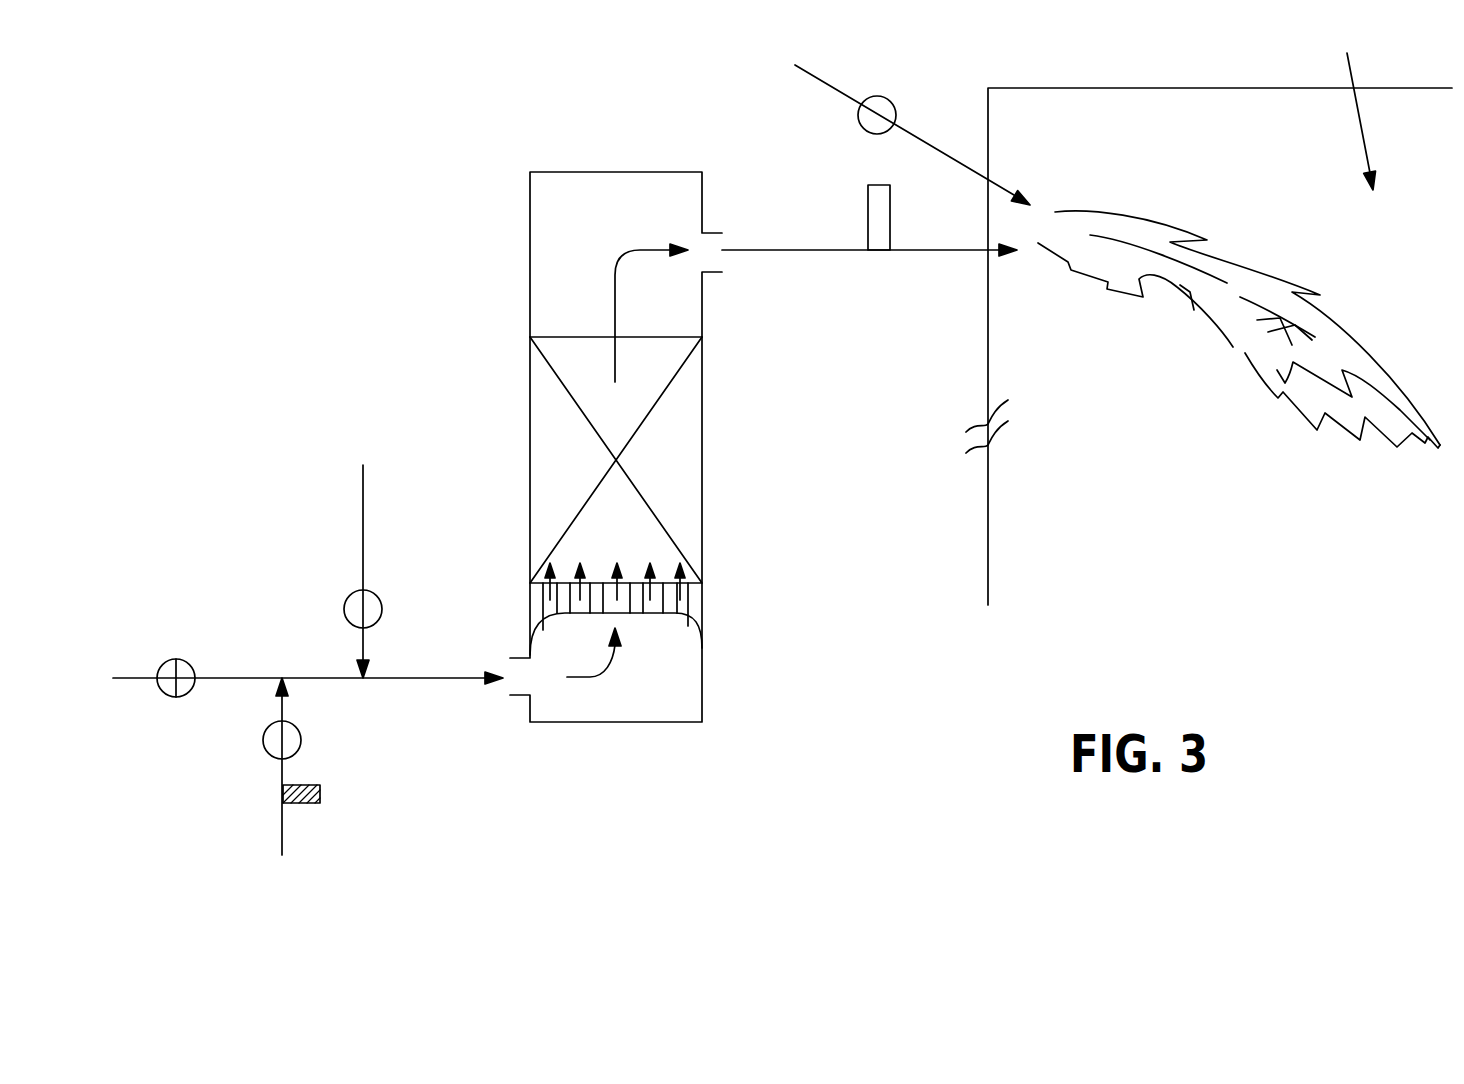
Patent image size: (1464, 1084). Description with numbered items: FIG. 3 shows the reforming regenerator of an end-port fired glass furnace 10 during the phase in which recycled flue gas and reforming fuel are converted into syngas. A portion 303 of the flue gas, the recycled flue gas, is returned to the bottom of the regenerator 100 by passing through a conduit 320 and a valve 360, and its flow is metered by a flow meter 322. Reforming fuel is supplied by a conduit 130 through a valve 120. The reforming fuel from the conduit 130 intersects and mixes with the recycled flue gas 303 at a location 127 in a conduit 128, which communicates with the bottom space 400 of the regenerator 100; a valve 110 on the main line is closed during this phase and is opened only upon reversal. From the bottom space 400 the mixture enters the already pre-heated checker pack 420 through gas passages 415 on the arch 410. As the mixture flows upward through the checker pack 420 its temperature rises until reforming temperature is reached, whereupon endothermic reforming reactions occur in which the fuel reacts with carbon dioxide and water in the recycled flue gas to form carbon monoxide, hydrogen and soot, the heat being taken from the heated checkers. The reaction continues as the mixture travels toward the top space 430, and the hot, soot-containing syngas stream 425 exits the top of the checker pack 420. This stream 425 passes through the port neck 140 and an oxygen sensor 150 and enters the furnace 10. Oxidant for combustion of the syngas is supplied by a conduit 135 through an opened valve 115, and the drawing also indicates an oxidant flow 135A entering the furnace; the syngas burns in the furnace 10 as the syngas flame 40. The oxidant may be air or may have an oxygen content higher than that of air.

The furnace 10 is at (1200, 88).
The syngas flame 40 is at (1280, 275).
The regenerator 100 is at (603, 172).
The valve 110 is at (180, 660).
The valve 115 is at (870, 97).
The valve 120 is at (382, 609).
The location 127 is at (363, 682).
The conduit 128 is at (455, 680).
The conduit 130 is at (363, 537).
The conduit 135 is at (830, 93).
The secondary fuel stream 135A is at (1362, 108).
The port neck 140 is at (830, 252).
The oxygen sensor 150 is at (868, 205).
The portion of flue gas 303 is at (282, 855).
The conduit 320 is at (280, 815).
The flow meter 322 is at (320, 793).
The valve 360 is at (263, 735).
The bottom space 400 is at (668, 703).
The arch 410 is at (702, 598).
The gas passages 415 is at (645, 607).
The checker pack 420 is at (680, 448).
The soot-containing stream 425 is at (620, 268).
The top space 430 is at (590, 214).